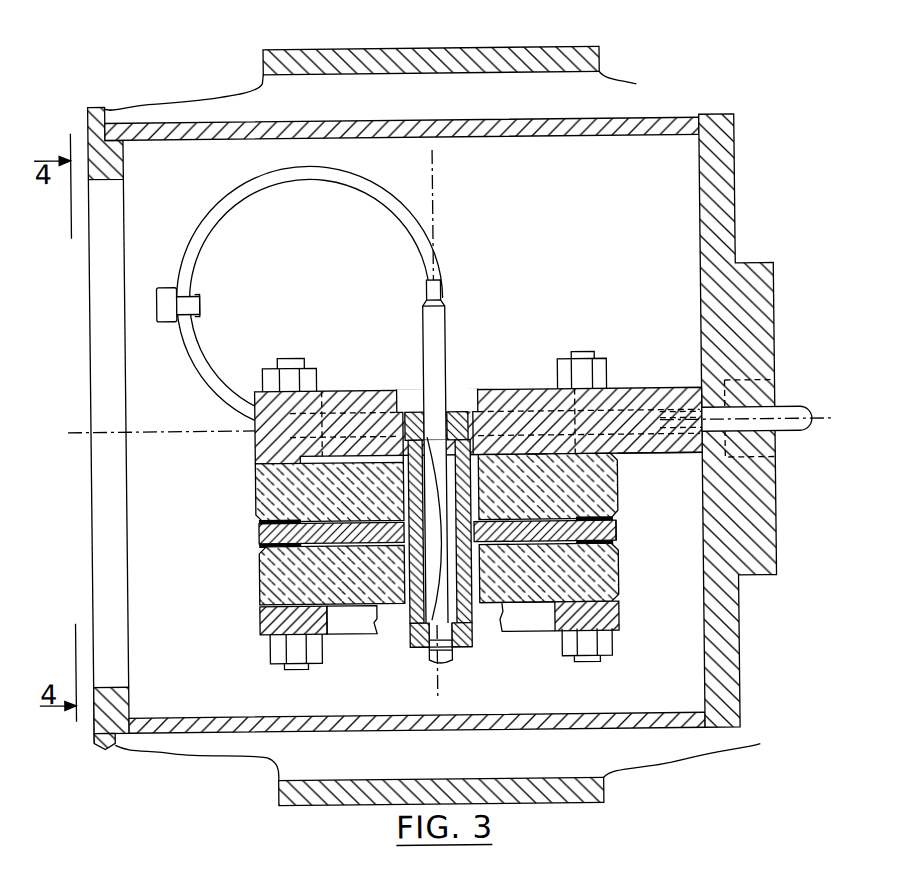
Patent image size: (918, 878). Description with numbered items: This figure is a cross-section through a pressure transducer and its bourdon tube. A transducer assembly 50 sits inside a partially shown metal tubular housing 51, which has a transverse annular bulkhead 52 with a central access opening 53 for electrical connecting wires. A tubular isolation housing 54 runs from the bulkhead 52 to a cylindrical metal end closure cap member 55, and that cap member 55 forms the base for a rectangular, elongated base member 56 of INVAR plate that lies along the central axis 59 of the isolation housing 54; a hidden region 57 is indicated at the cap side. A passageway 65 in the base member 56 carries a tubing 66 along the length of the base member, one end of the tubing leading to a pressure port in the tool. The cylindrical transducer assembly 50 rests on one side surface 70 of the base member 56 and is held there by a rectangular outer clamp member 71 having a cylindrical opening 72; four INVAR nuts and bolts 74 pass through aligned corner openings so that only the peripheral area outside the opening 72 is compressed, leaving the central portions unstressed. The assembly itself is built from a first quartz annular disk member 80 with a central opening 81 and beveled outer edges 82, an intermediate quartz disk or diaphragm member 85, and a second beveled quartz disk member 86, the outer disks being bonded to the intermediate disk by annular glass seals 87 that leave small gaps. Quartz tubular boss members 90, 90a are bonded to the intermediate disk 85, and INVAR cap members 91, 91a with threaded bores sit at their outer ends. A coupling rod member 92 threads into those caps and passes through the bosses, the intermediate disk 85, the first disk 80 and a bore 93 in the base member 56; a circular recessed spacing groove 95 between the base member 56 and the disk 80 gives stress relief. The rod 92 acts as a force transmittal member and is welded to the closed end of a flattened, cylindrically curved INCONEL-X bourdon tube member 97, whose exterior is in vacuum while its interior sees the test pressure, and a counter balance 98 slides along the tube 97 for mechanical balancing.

The transducer assembly 50 is at (622, 530).
The tubular housing 51 is at (596, 47).
The annular bulkhead 52 is at (110, 106).
The central access opening 53 is at (124, 181).
The isolation housing 54 is at (608, 118).
The end closure cap member 55 is at (736, 188).
The base member 56 is at (655, 388).
The hidden boss passage 57 is at (725, 383).
The central axis 59 is at (152, 429).
The passageway 65 is at (537, 458).
The tubing 66 is at (783, 408).
The side surface 70 is at (672, 457).
The outer clamp member 71 is at (258, 620).
The cylindrically shaped opening 72 is at (327, 633).
The nuts and bolts 74 is at (298, 358).
The first annular disk member 80 is at (617, 485).
The central opening 81 is at (418, 648).
The beveled outer edges 82 is at (257, 466).
The intermediate annular disk member 85 is at (257, 535).
The second annular disk member 86 is at (257, 581).
The seal 87 is at (612, 542).
The tubular boss member 90 is at (477, 628).
The tubular boss member 90a is at (403, 408).
The cap member 91 is at (461, 648).
The cap member 91a is at (453, 417).
The coupling rod member 92 is at (448, 355).
The bore 93 is at (466, 392).
The recessed spacing groove 95 is at (602, 357).
The bourdon tube member 97 is at (392, 192).
The counter balance 98 is at (162, 286).